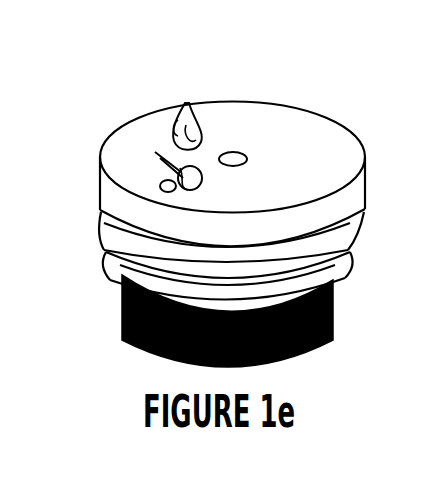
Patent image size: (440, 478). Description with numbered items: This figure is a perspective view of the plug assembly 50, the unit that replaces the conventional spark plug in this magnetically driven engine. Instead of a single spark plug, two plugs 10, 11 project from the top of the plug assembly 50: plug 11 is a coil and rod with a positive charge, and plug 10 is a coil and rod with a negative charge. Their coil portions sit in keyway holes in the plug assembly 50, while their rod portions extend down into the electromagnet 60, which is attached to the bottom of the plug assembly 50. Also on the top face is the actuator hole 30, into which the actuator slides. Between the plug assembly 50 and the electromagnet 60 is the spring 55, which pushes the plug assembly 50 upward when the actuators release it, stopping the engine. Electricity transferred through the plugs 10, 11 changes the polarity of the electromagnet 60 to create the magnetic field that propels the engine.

The plug 10 is at (188, 110).
The plug 11 is at (182, 176).
The actuator hole 30 is at (237, 157).
The plug assembly 50 is at (127, 148).
The spring 55 is at (123, 252).
The electromagnet 60 is at (125, 340).